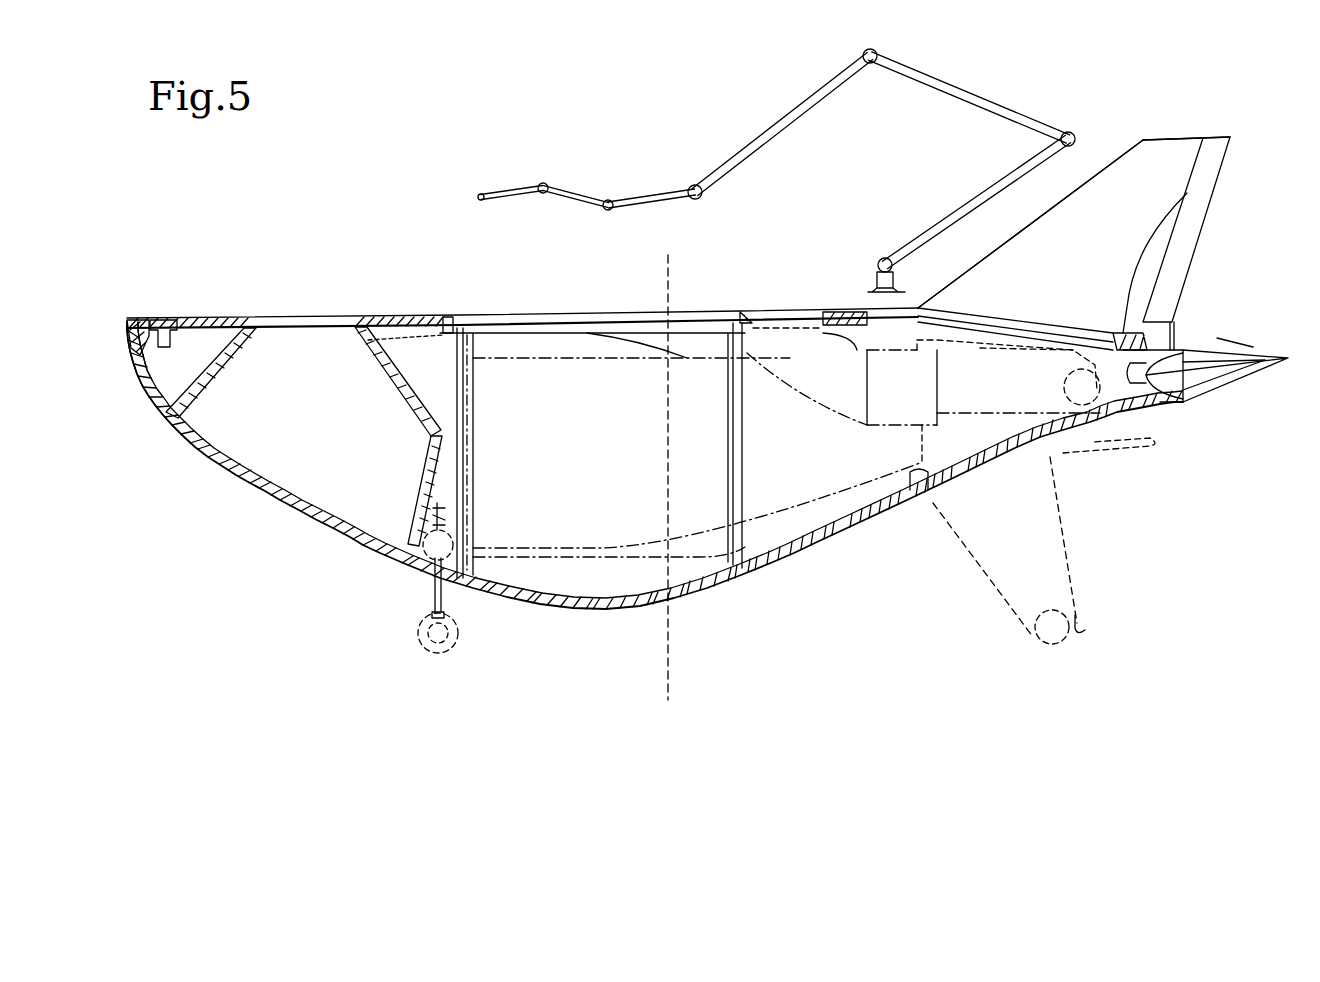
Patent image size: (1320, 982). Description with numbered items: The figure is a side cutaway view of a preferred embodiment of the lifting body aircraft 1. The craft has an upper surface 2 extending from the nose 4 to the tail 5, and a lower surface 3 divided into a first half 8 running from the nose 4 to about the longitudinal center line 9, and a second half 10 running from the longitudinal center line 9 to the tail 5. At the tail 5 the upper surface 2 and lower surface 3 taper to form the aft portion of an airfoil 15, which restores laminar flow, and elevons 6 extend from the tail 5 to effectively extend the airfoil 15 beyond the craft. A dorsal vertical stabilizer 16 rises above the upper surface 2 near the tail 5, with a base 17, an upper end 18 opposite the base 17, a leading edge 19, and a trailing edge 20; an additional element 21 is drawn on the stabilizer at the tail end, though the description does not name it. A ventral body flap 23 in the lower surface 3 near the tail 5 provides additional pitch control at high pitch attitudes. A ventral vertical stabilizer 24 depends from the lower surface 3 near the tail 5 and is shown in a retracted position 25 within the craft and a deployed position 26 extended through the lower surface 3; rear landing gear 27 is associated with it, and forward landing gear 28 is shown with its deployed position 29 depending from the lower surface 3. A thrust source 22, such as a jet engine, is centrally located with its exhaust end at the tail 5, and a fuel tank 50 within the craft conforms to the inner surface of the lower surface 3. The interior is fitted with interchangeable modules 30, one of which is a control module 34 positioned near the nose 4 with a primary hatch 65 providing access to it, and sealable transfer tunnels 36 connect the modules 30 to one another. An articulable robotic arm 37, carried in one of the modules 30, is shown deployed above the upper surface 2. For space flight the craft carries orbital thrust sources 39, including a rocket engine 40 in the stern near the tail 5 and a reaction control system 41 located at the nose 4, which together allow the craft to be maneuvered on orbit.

The lifting body aircraft 1 is at (420, 210).
The upper surface 2 is at (203, 317).
The lower surface 3 is at (160, 425).
The nose 4 is at (127, 320).
The tail 5 is at (1173, 350).
The elevons 6 is at (1253, 347).
The first half 8 is at (273, 513).
The longitudinal center line 9 is at (682, 636).
The second half 10 is at (830, 543).
The airfoil 15 is at (1217, 163).
The dorsal vertical stabilizers 16 is at (1096, 229).
The base 17 is at (1047, 320).
The upper end 18 is at (1160, 137).
The leading edge 19 is at (1125, 148).
The trailing edge 20 is at (1127, 333).
The rudder 21 is at (1222, 160).
The thrust source 22 is at (1193, 360).
The ventral body flap 23 is at (1095, 450).
The ventral vertical stabilizers 24 is at (1063, 582).
The retracted position 25 is at (958, 447).
The deployed position 26 is at (987, 557).
The rear landing gear 27 is at (1060, 647).
The forward landing gear 28 is at (420, 587).
The deployed position 29 is at (443, 650).
The internal interchangeable modules 30 is at (213, 428).
The control module 34 is at (288, 414).
The transfer tunnels 36 is at (443, 376).
The articulable robotic arm 37 is at (947, 82).
The orbital thrust sources 39 is at (162, 317).
The rocket engine 40 is at (1187, 377).
The reaction control system 41 is at (140, 387).
The fuel tanks 50 is at (787, 463).
The primary hatch 65 is at (263, 317).